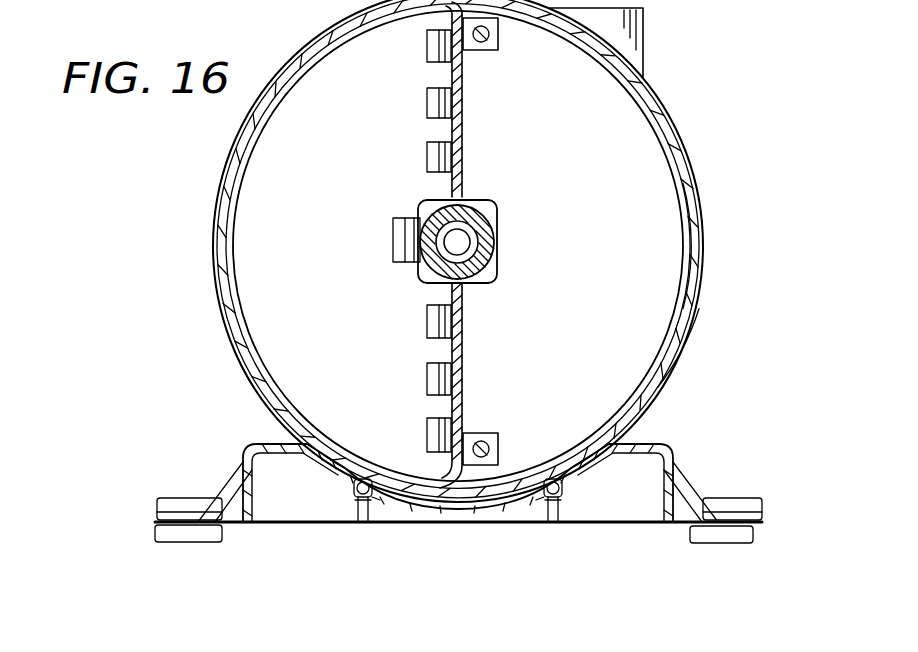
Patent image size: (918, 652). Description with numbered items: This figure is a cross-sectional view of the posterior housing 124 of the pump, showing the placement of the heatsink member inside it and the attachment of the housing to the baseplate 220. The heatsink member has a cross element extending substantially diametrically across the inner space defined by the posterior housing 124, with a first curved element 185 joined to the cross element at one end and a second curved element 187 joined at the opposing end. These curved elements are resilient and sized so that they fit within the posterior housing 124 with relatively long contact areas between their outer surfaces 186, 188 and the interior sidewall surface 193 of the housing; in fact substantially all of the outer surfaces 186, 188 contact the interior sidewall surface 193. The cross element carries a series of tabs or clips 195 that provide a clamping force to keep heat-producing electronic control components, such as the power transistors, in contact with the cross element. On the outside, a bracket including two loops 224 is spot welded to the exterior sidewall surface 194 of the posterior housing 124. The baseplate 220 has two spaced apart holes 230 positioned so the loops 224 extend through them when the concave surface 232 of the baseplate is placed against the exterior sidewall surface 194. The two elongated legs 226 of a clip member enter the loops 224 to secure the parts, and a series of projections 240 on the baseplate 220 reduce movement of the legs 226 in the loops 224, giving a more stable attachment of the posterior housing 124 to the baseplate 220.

The posterior housing 124 is at (233, 332).
The first curved element 185 is at (245, 345).
The outer surface of first curved element 186 is at (215, 262).
The second curved element 187 is at (690, 215).
The outer surface of second curved element 188 is at (690, 145).
The interior sidewall surface 193 is at (250, 128).
The exterior sidewall surface 194 is at (692, 338).
The tabs or clips 195 is at (427, 160).
The baseplate 220 is at (243, 450).
The loops 224 is at (362, 500).
The elongated legs 226 is at (356, 488).
The holes 230 is at (384, 498).
The concave surface 232 is at (255, 465).
The projections 240 is at (364, 481).